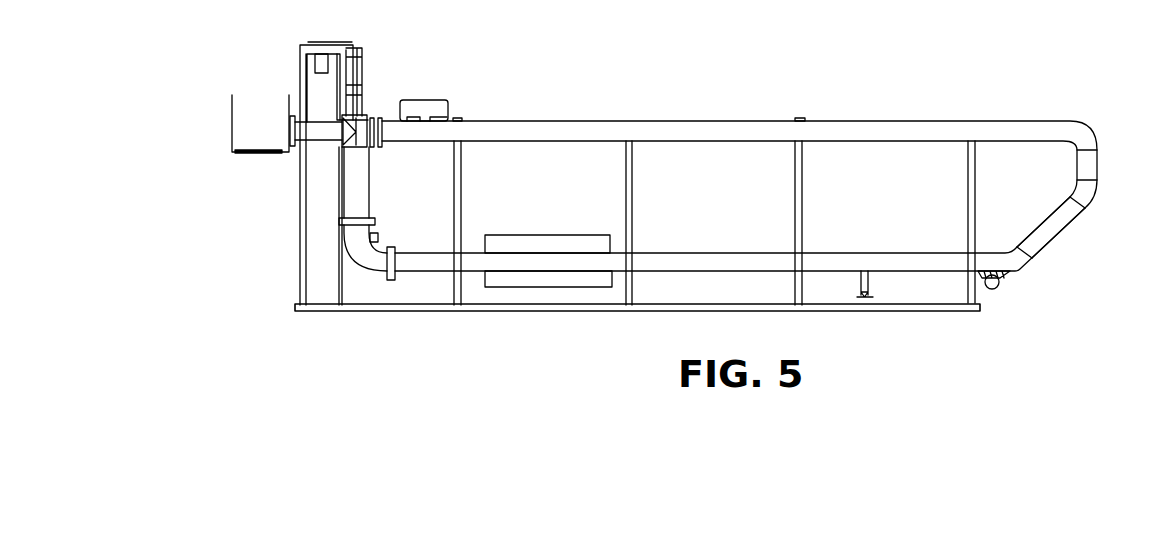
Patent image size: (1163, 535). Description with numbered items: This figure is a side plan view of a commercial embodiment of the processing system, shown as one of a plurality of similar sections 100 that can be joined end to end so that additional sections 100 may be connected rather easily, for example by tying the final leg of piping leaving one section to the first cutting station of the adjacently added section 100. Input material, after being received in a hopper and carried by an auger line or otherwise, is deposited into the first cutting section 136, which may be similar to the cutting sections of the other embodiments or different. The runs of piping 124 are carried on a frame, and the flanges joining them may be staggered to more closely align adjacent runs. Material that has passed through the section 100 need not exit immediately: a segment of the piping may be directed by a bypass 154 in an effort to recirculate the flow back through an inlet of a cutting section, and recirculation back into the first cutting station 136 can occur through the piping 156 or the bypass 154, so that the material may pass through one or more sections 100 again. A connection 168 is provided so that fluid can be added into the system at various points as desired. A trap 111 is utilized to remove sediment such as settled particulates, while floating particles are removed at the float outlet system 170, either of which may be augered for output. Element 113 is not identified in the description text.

The section 100 is at (884, 109).
The trap 111 is at (998, 286).
The heater unit 113 is at (543, 280).
The piping 124 is at (1043, 237).
The first cutting section 136 is at (363, 188).
The bypass 154 is at (253, 120).
The piping 156 is at (318, 133).
The connection 168 is at (872, 282).
The float outlet system 170 is at (443, 93).